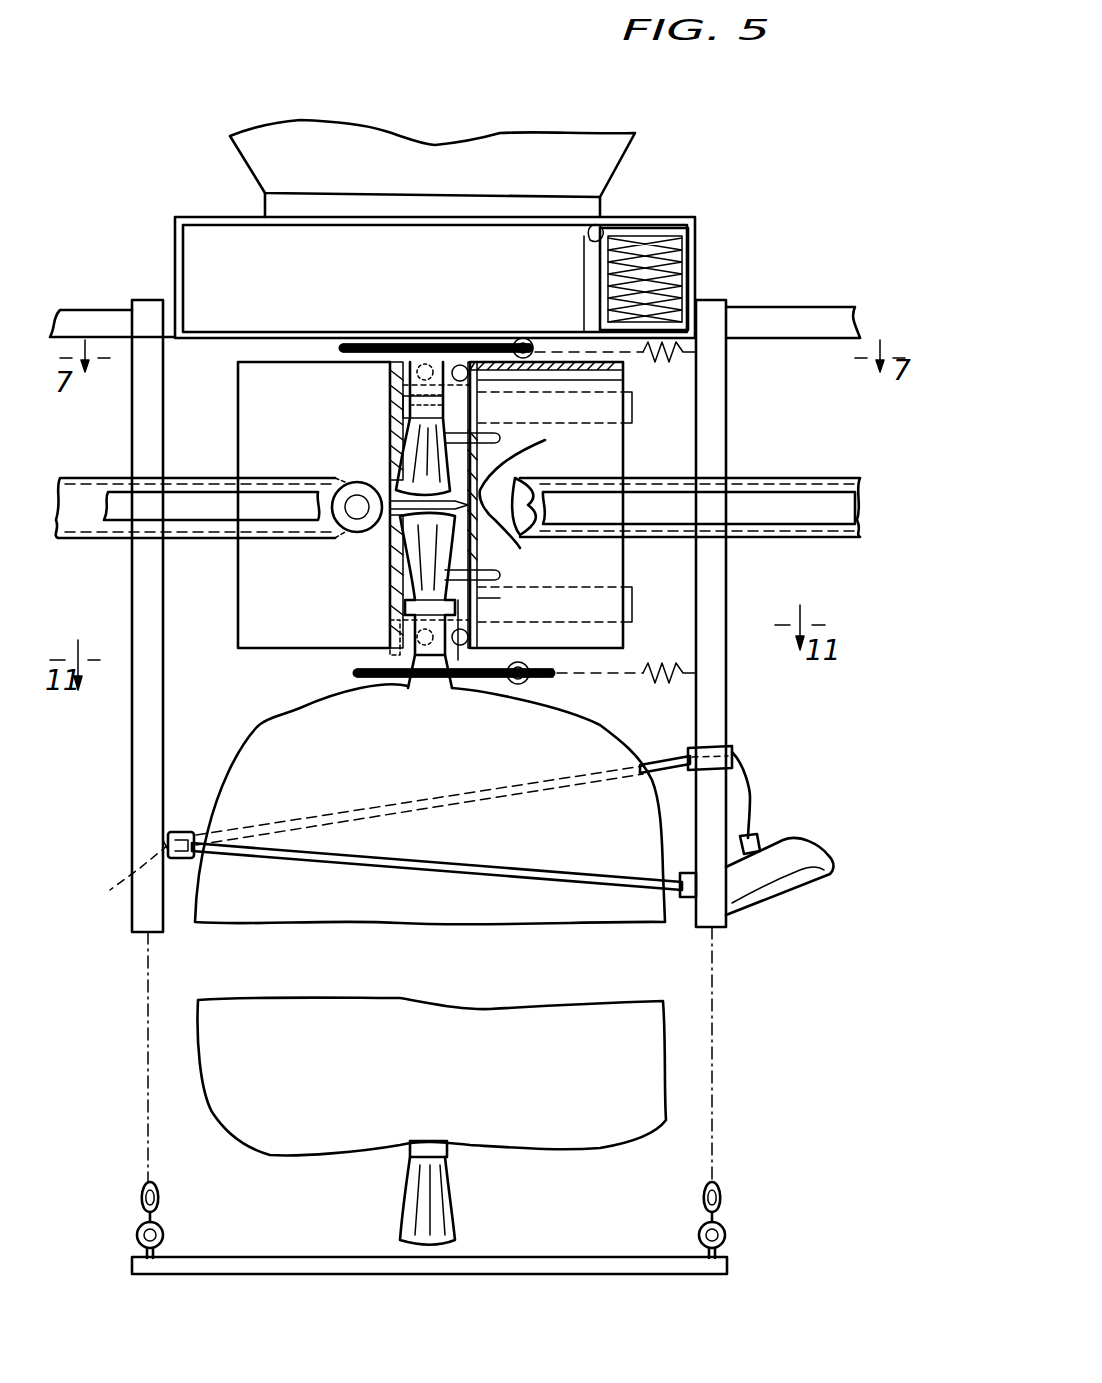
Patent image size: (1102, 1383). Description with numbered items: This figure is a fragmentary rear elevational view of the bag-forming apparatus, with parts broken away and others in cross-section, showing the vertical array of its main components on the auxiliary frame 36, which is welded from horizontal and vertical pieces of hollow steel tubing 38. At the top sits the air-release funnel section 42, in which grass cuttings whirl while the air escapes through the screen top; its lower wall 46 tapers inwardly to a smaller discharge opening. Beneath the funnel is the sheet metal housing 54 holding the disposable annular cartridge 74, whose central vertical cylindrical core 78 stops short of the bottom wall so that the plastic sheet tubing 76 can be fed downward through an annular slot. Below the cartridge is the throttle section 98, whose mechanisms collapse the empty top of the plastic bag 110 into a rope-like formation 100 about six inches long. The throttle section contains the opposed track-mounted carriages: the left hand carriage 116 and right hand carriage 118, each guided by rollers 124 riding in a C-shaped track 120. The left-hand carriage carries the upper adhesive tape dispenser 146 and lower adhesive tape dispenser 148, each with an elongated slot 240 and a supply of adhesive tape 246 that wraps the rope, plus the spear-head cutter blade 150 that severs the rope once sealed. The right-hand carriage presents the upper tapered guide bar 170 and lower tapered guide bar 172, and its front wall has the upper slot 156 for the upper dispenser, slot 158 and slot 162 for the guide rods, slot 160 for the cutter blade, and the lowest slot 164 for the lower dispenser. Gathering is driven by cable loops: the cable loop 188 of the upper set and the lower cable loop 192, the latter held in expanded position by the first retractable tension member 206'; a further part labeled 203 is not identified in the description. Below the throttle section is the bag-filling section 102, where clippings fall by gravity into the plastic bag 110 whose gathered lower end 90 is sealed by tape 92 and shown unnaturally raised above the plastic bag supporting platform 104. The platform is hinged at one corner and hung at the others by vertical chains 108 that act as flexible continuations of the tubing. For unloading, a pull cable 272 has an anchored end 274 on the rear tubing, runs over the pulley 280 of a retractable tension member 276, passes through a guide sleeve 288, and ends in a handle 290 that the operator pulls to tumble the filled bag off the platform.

The air-release funnel section 42 is at (500, 128).
The lower wall of the funnel 46 is at (628, 148).
The central vertical cylindrical core 78 is at (600, 270).
The sheet metal housing 54 is at (690, 252).
The plastic sheet tubing 76 is at (682, 268).
The annular cartridge 74 is at (600, 230).
The hollow steel tubing 38 is at (68, 312).
The auxiliary frame 36 is at (730, 380).
The throttle section 98 is at (685, 436).
The cable loop 188 is at (330, 348).
The lower cable loop 192 is at (360, 675).
The eyelet 203 is at (530, 345).
The first retractable tension member 206' is at (680, 532).
The left hand carriage 116 is at (345, 616).
The right hand carriage 118 is at (612, 562).
The upper adhesive tape dispenser 146 is at (490, 420).
The lower adhesive tape dispenser 148 is at (510, 617).
The elongated slot 240 is at (468, 380).
The upper tapered guide bar 170 is at (458, 364).
The lower tapered guide bar 172 is at (460, 680).
The upper slot 156 is at (450, 385).
The rope-like formation 100 is at (408, 455).
The adhesive tape 246 is at (404, 403).
The cutter blade 150 is at (393, 488).
The slot 158 is at (480, 432).
The slot 162 is at (480, 568).
The slot 160 is at (490, 500).
The lowest slot 164 is at (480, 635).
The C-shaped track 120 is at (75, 478).
The rollers 124 is at (560, 508).
The bag-filling section 102 is at (690, 965).
The pulley 280 is at (195, 862).
The pull cable 272 is at (450, 875).
The anchored end 274 is at (680, 888).
The retractable tension member 276 is at (110, 888).
The guide sleeve 288 is at (732, 752).
The handle 290 is at (818, 855).
The plastic bag 110 is at (592, 1068).
The tape 92 is at (447, 1150).
The gathered lower end 90 is at (410, 1215).
The plastic bag supporting platform 104 is at (568, 1258).
The vertical chains 108 is at (137, 1200).